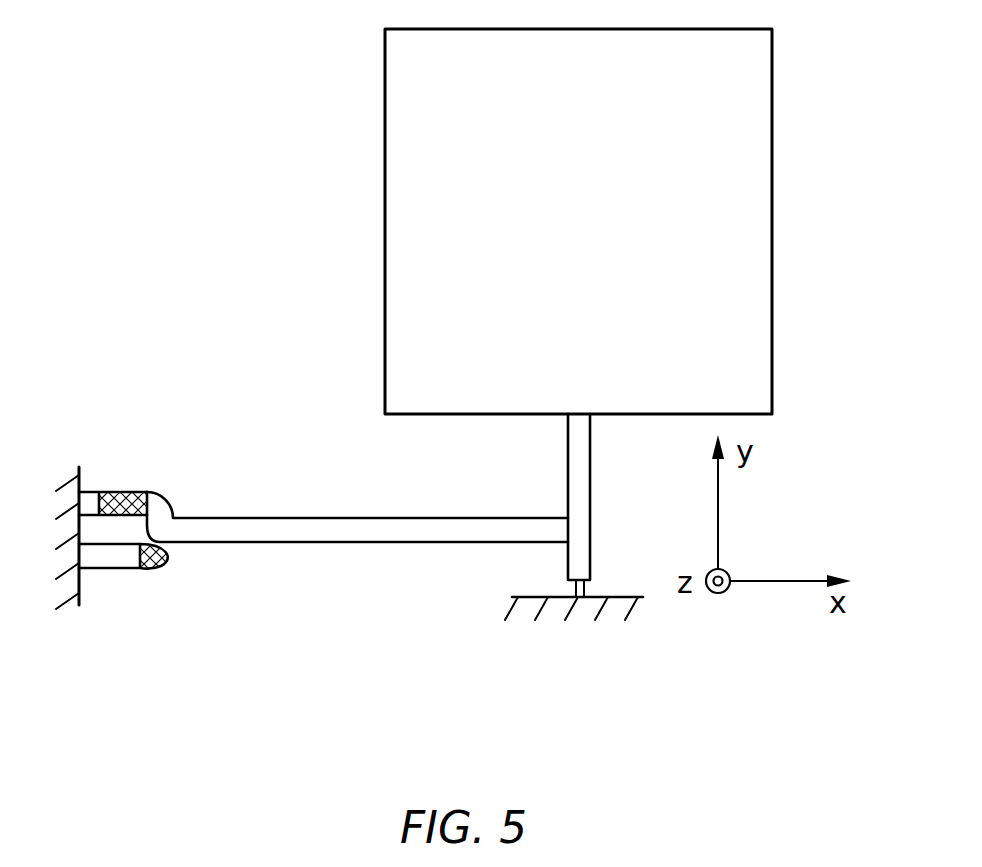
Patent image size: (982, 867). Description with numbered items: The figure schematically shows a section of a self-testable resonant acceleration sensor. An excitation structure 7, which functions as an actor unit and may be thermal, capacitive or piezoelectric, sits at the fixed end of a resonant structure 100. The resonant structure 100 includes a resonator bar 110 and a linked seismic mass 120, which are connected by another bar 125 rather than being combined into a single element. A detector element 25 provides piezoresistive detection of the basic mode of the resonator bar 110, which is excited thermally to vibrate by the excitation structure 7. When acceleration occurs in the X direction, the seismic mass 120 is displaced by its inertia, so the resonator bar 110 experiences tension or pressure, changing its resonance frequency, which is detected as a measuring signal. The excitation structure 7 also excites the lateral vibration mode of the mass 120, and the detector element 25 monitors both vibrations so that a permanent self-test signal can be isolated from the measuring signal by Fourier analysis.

The resonant structure 100 is at (160, 280).
The excitation structure 7 is at (128, 492).
The detector element 25 is at (153, 568).
The resonator bar 110 is at (436, 529).
The seismic mass 120 is at (752, 260).
The bar 125 is at (580, 487).